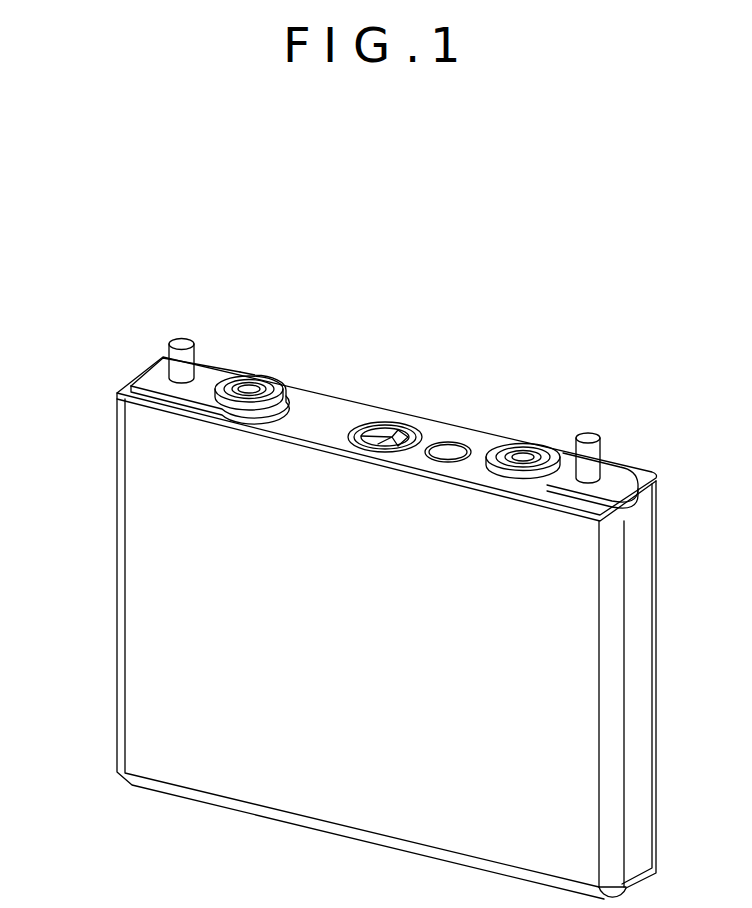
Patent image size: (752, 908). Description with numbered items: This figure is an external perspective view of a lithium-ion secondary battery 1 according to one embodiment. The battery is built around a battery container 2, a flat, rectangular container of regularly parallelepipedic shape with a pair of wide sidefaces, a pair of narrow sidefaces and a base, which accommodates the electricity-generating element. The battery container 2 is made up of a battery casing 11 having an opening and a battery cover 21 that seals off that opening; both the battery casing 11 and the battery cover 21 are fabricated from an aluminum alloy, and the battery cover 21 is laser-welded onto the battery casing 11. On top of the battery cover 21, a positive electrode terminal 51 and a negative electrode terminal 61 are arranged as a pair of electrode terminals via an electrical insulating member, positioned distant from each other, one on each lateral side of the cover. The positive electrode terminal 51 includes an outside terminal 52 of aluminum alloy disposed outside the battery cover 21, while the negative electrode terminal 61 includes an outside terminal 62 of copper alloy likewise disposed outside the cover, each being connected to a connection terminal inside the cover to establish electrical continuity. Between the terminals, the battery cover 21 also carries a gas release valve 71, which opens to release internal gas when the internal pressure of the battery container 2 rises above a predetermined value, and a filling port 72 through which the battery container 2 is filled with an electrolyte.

The lithium-ion secondary battery 1 is at (493, 262).
The battery container 2 is at (56, 423).
The battery casing 11 is at (150, 517).
The battery cover 21 is at (270, 432).
The positive electrode terminal 51 is at (155, 375).
The outside terminal 52 is at (212, 366).
The negative electrode terminal 61 is at (620, 470).
The outside terminal 62 is at (608, 462).
The gas release valve 71 is at (398, 420).
The filling port 72 is at (450, 452).